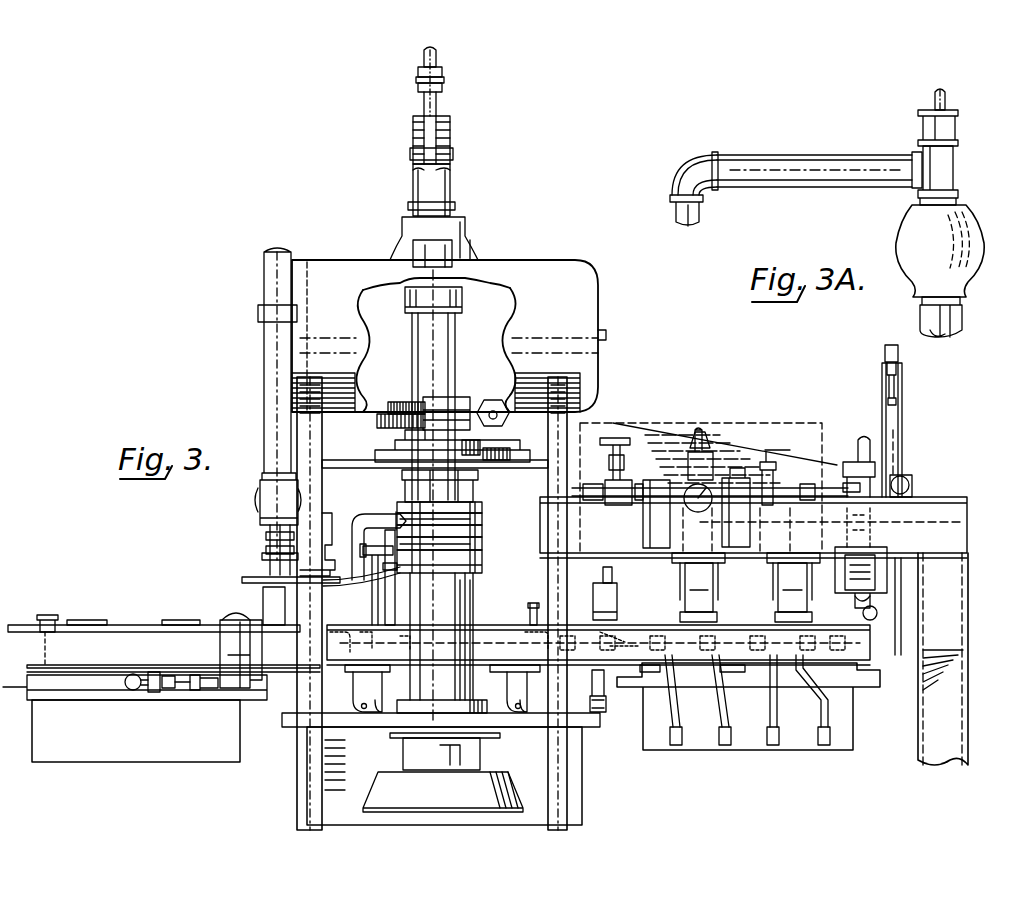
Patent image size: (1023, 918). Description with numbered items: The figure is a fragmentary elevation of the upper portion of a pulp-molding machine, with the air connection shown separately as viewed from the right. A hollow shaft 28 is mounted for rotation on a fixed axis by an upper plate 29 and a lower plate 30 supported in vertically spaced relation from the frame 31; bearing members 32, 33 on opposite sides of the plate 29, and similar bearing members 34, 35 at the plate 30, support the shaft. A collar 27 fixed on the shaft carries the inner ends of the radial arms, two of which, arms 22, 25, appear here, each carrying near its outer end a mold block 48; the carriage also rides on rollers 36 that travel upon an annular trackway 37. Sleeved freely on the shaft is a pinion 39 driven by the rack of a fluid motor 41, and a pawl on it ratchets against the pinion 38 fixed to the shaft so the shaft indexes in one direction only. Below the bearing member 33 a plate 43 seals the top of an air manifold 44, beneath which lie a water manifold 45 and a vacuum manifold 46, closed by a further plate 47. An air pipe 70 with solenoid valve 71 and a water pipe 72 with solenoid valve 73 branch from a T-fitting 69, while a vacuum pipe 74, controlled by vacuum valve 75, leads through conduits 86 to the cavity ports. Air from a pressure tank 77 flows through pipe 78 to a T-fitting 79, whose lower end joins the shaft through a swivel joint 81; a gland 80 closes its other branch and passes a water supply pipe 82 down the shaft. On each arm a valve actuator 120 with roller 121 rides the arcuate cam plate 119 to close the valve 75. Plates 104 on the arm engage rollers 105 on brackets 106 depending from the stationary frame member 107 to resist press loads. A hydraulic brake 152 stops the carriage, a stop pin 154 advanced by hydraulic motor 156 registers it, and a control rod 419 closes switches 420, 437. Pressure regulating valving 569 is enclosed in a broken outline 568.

In FIG. 3, the water supply pipe 82 is at (438, 104).
In FIG. 3A, the water supply pipe 82 is at (947, 96).
In FIG. 3, the gland 80 is at (446, 130).
In FIG. 3A, the gland 80 is at (956, 122).
In FIG. 3, the pipe 78 is at (452, 206).
In FIG. 3A, the pipe 78 is at (700, 215).
In FIG. 3A, the T-fitting 79 is at (953, 168).
In FIG. 3, the swivel joint 81 is at (470, 236).
In FIG. 3A, the swivel joint 81 is at (972, 244).
In FIG. 3, the pressure tank 77 is at (580, 290).
In FIG. 3, the shaft 28 is at (455, 350).
In FIG. 3A, the shaft 28 is at (962, 322).
In FIG. 3, the pinion or ratchet wheel 38 is at (395, 402).
In FIG. 3, the pinion 39 is at (377, 422).
In FIG. 3, the fluid motor 41 is at (493, 398).
In FIG. 3, the bearing member 32 is at (488, 448).
In FIG. 3, the plate 29 is at (505, 470).
In FIG. 3, the bearing member 33 is at (400, 478).
In FIG. 3, the plate 43 is at (484, 506).
In FIG. 3, the air manifold 44 is at (484, 520).
In FIG. 3, the water manifold 45 is at (484, 534).
In FIG. 3, the vacuum manifold 46 is at (484, 550).
In FIG. 3, the plate 47 is at (484, 568).
In FIG. 3, the collar 27 is at (474, 600).
In FIG. 3, the arm 22 is at (568, 625).
In FIG. 3, the vacuum pipe 74 is at (375, 565).
In FIG. 3, the water pipe 72 is at (386, 612).
In FIG. 3, the vacuum valve 75 is at (618, 640).
In FIG. 3, the valve actuator 120 is at (618, 600).
In FIG. 3, the roller 121 is at (601, 575).
In FIG. 3, the bracket 106 is at (712, 568).
In FIG. 3, the roller 105 is at (715, 582).
In FIG. 3, the transversely extending plate 104 is at (85, 620).
In FIG. 3, the broken outline 568 is at (625, 428).
In FIG. 3, the pressure regulating valving 569 is at (760, 420).
In FIG. 3, the switch 437 is at (882, 352).
In FIG. 3, the switch 420 is at (908, 470).
In FIG. 3, the stationary frame member 107 is at (920, 515).
In FIG. 3, the hydraulic motor 156 is at (960, 527).
In FIG. 3, the frame 31 is at (968, 588).
In FIG. 3, the stop pin 154 is at (866, 617).
In FIG. 3, the control rod 419 is at (895, 650).
In FIG. 3, the mold block 48 is at (242, 750).
In FIG. 3, the conduit 86 is at (774, 700).
In FIG. 3, the roller 36 is at (608, 706).
In FIG. 3, the annular trackway 37 is at (590, 727).
In FIG. 3, the bearing member 34 is at (486, 706).
In FIG. 3, the plate 30 is at (495, 738).
In FIG. 3, the bearing member 35 is at (400, 740).
In FIG. 3, the hydraulic brake 152 is at (515, 780).
In FIG. 3, the arcuate cam plate 119 is at (242, 580).
In FIG. 3, the solenoid valve 71 is at (228, 614).
In FIG. 3, the arm 25 is at (135, 625).
In FIG. 3, the T-fitting 69 is at (145, 690).
In FIG. 3, the solenoid valve 73 is at (240, 683).
In FIG. 3, the air pipe 70 is at (368, 512).